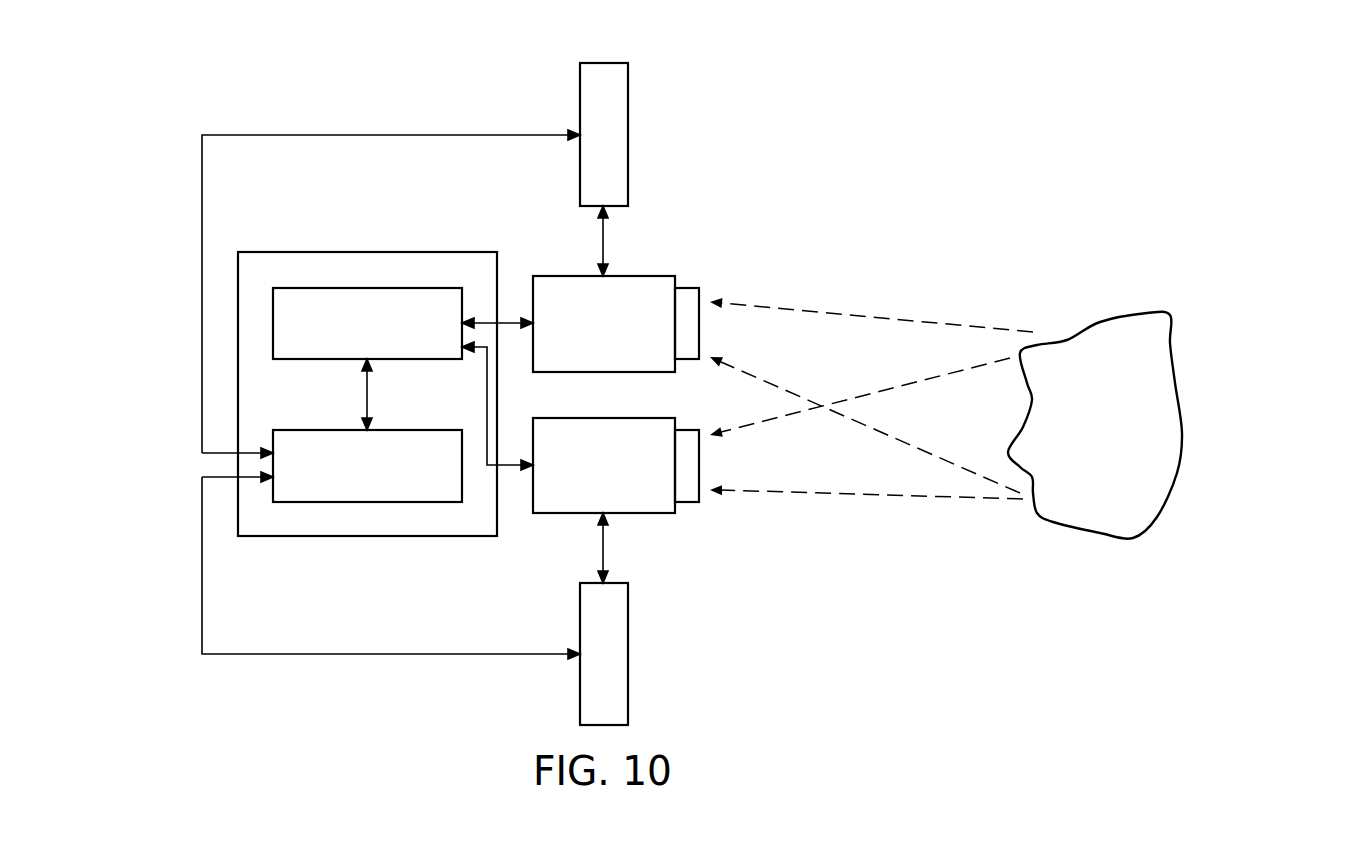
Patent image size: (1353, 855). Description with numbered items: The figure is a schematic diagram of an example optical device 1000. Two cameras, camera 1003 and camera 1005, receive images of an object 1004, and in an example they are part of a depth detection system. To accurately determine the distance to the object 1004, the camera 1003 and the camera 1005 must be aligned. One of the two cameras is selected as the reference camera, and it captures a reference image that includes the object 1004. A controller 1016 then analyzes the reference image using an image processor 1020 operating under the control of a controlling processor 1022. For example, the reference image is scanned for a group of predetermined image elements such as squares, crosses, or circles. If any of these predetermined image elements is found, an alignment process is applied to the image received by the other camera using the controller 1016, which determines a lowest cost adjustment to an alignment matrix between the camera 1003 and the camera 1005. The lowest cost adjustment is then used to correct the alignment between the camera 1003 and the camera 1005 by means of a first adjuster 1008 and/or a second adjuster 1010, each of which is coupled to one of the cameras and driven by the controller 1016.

The optical device 1000 is at (870, 88).
The camera 1003 is at (567, 505).
The object 1004 is at (1182, 463).
The camera 1005 is at (567, 285).
The first adjuster 1008 is at (588, 97).
The second adjuster 1010 is at (588, 691).
The controller 1016 is at (328, 240).
The image processor 1020 is at (333, 362).
The controlling processor 1022 is at (402, 427).